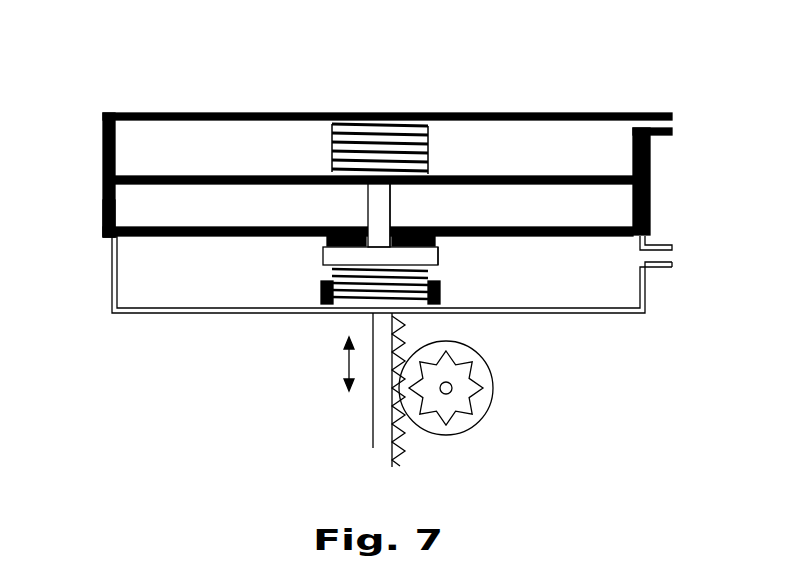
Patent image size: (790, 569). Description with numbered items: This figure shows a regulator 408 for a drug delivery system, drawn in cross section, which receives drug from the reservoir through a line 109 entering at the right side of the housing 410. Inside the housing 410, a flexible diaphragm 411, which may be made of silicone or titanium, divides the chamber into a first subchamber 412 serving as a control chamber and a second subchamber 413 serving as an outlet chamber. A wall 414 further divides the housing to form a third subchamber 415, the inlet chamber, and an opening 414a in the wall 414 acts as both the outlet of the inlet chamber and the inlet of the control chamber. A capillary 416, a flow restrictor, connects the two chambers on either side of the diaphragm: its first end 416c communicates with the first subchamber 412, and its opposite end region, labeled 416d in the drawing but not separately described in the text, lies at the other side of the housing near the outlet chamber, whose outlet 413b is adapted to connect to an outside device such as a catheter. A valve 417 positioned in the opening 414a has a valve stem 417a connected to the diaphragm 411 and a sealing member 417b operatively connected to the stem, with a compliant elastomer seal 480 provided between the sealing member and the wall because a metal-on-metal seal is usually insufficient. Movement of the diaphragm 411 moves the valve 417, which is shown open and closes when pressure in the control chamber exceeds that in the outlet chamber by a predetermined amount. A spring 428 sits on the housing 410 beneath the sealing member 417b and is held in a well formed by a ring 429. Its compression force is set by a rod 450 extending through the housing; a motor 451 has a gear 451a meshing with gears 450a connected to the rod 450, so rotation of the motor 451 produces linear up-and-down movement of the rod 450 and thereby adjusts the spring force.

The regulator 408 is at (124, 66).
The housing 410 is at (110, 305).
The flexible diaphragm 411 is at (218, 175).
The first subchamber 412 is at (174, 190).
The second subchamber 413 is at (275, 145).
The outlet of the second subchamber 413b is at (625, 120).
The wall 414 is at (495, 227).
The opening 414a is at (394, 230).
The third subchamber 415 is at (130, 276).
The capillary 416 is at (103, 170).
The first end of the capillary 416c is at (117, 228).
The housing right wall 416d is at (633, 142).
The valve 417 is at (438, 257).
The valve stem 417a is at (367, 213).
The sealing member 417b is at (325, 252).
The spring 428 is at (438, 272).
The ring 429 is at (322, 297).
The rod 450 is at (372, 410).
The gears 450a is at (403, 452).
The motor 451 is at (493, 417).
The gear 451a is at (468, 362).
The seal 480 is at (325, 242).
The line 109 is at (662, 245).